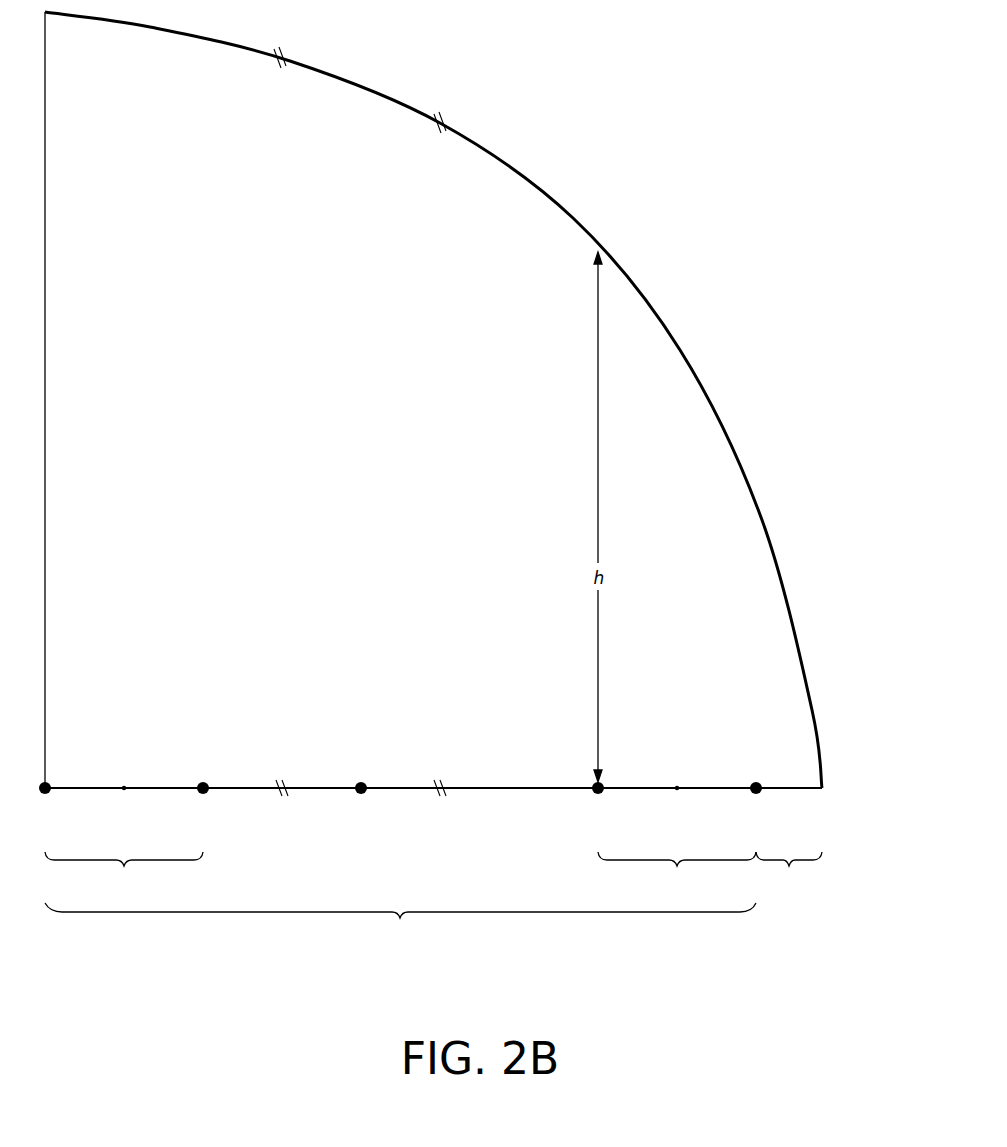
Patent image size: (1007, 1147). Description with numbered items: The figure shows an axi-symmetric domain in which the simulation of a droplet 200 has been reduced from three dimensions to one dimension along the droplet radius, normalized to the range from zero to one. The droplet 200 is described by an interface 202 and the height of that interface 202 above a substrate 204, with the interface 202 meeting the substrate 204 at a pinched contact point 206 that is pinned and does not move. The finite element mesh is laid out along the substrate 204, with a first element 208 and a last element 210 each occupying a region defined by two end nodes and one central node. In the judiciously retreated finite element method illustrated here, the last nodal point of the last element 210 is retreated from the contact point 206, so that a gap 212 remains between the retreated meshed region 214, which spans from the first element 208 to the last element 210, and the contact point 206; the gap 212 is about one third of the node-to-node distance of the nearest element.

The droplet 200 is at (375, 481).
The interface 202 is at (573, 218).
The substrate 204 is at (251, 788).
The pinched contact point 206 is at (821, 787).
The first element 208 is at (124, 876).
The last element 210 is at (677, 876).
The gap 212 is at (789, 876).
The retreated meshed region 214 is at (400, 928).